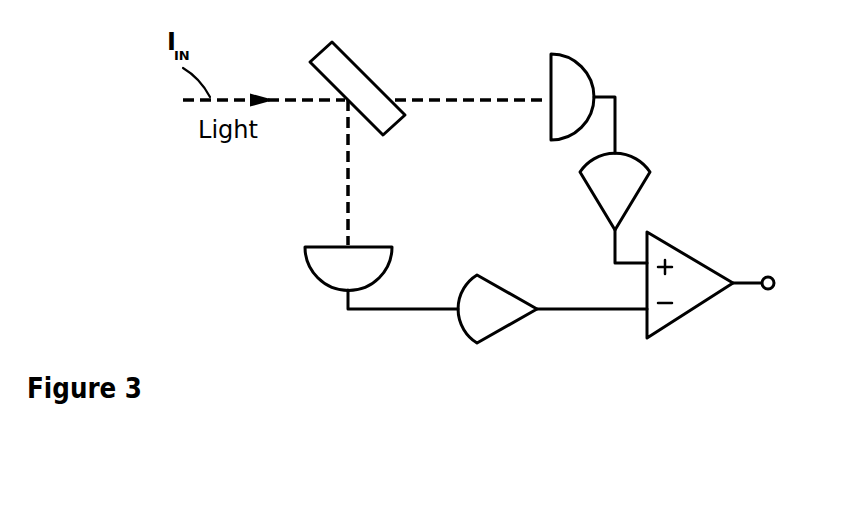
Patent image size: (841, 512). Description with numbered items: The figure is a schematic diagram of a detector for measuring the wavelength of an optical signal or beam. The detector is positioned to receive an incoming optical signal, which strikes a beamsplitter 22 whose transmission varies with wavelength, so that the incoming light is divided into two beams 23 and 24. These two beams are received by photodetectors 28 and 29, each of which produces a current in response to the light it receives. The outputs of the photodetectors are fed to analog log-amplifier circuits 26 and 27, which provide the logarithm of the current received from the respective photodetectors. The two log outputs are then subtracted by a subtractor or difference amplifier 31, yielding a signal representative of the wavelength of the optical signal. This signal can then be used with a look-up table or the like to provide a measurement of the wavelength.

The beamsplitter 22 is at (342, 63).
The beam 23 is at (443, 97).
The beam 24 is at (343, 197).
The analog log-amplifier circuit 26 is at (578, 83).
The analog log-amplifier circuit 27 is at (328, 265).
The photodetector 28 is at (633, 157).
The photodetector 29 is at (500, 313).
The difference amplifier 31 is at (692, 295).